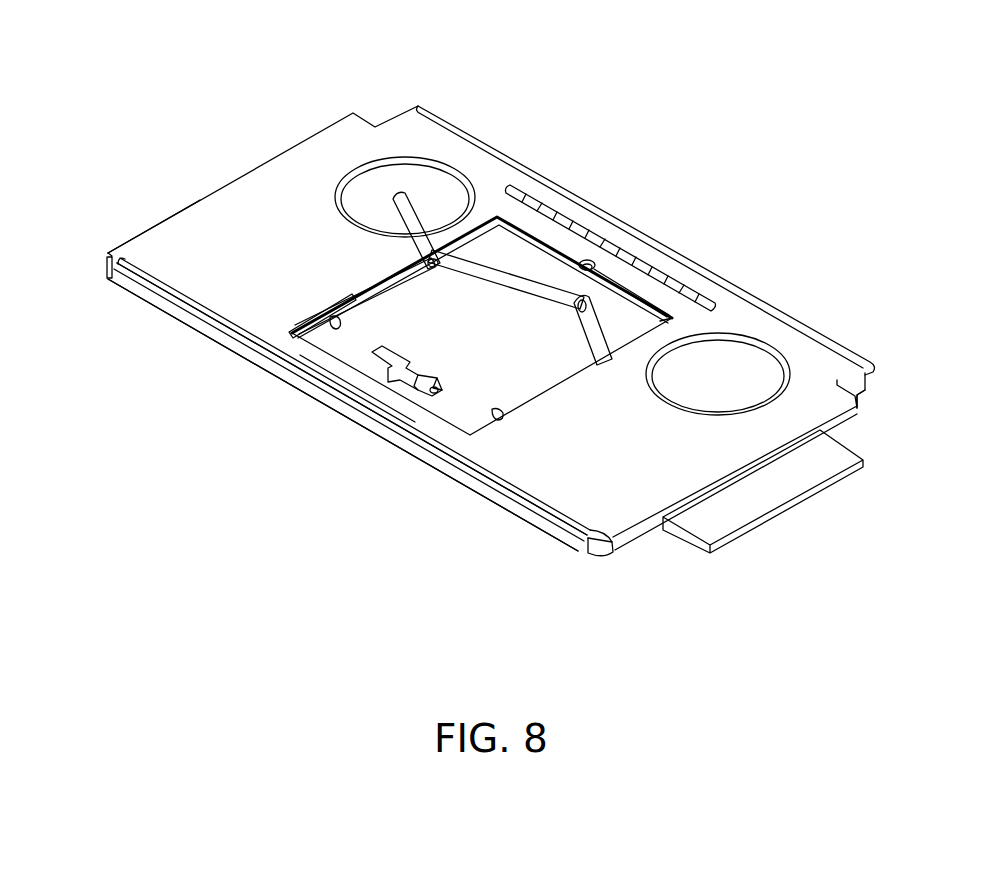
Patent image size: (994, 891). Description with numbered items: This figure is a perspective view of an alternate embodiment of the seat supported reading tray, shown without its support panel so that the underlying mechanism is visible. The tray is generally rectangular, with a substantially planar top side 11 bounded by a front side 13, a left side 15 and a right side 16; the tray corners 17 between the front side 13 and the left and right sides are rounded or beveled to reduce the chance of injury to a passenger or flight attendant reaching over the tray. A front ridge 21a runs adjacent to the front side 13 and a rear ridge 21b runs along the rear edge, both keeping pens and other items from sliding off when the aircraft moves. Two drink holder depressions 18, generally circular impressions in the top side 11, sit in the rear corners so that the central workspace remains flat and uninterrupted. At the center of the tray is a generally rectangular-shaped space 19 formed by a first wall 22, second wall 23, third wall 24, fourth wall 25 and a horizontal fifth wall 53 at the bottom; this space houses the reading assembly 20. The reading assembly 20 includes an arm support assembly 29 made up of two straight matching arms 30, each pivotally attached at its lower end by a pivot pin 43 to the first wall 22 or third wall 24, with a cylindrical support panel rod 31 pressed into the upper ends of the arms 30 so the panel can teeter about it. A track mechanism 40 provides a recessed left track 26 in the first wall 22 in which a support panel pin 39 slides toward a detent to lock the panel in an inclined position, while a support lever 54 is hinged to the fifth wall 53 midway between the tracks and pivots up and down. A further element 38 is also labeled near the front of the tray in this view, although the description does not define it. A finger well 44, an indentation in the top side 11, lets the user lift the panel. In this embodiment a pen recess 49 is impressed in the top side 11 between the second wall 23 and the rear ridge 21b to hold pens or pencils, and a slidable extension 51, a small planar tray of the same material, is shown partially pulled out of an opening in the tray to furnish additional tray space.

The top side 11 is at (486, 328).
The front side 13 is at (225, 337).
The left side 15 is at (163, 220).
The right side 16 is at (848, 420).
The tray corners 17 is at (602, 553).
The drink holder depression 18 is at (375, 180).
The rectangular-shaped space 19 is at (641, 322).
The reading assembly 20 is at (232, 382).
The front ridge 21a is at (557, 517).
The rear ridge 21b is at (493, 141).
The first wall 22 is at (355, 295).
The second wall 23 is at (600, 330).
The third wall 24 is at (548, 458).
The fourth wall 25 is at (408, 403).
The left track 26 is at (328, 320).
The arm support assembly 29 is at (412, 180).
The arms 30 is at (418, 248).
The support panel rod 31 is at (434, 222).
The groove 38 is at (462, 405).
The support panel pins 39 is at (332, 323).
The track mechanism 40 is at (290, 395).
The pivot pins 43 is at (413, 256).
The finger well 44 is at (592, 262).
The pen recess 49 is at (557, 212).
The slidable extension 51 is at (780, 508).
The fifth wall 53 is at (482, 326).
The support lever 54 is at (407, 382).